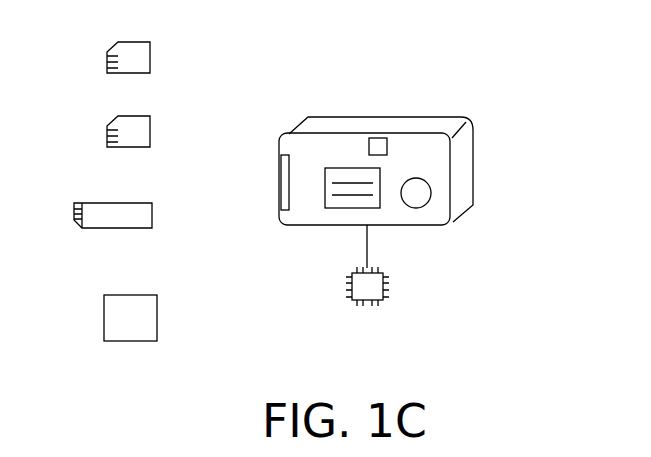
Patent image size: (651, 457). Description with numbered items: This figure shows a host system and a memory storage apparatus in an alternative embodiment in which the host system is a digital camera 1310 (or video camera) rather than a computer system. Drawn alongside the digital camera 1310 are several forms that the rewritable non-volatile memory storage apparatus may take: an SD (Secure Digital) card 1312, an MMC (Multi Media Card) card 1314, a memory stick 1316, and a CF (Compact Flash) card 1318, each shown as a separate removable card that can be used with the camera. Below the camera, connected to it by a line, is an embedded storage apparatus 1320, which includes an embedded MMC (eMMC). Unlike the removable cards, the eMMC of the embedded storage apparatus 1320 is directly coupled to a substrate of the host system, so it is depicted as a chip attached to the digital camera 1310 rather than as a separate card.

The digital camera 1310 is at (477, 156).
The SD card 1312 is at (150, 48).
The MMC card 1314 is at (150, 122).
The memory stick 1316 is at (152, 213).
The CF card 1318 is at (157, 311).
The embedded storage apparatus 1320 is at (389, 285).